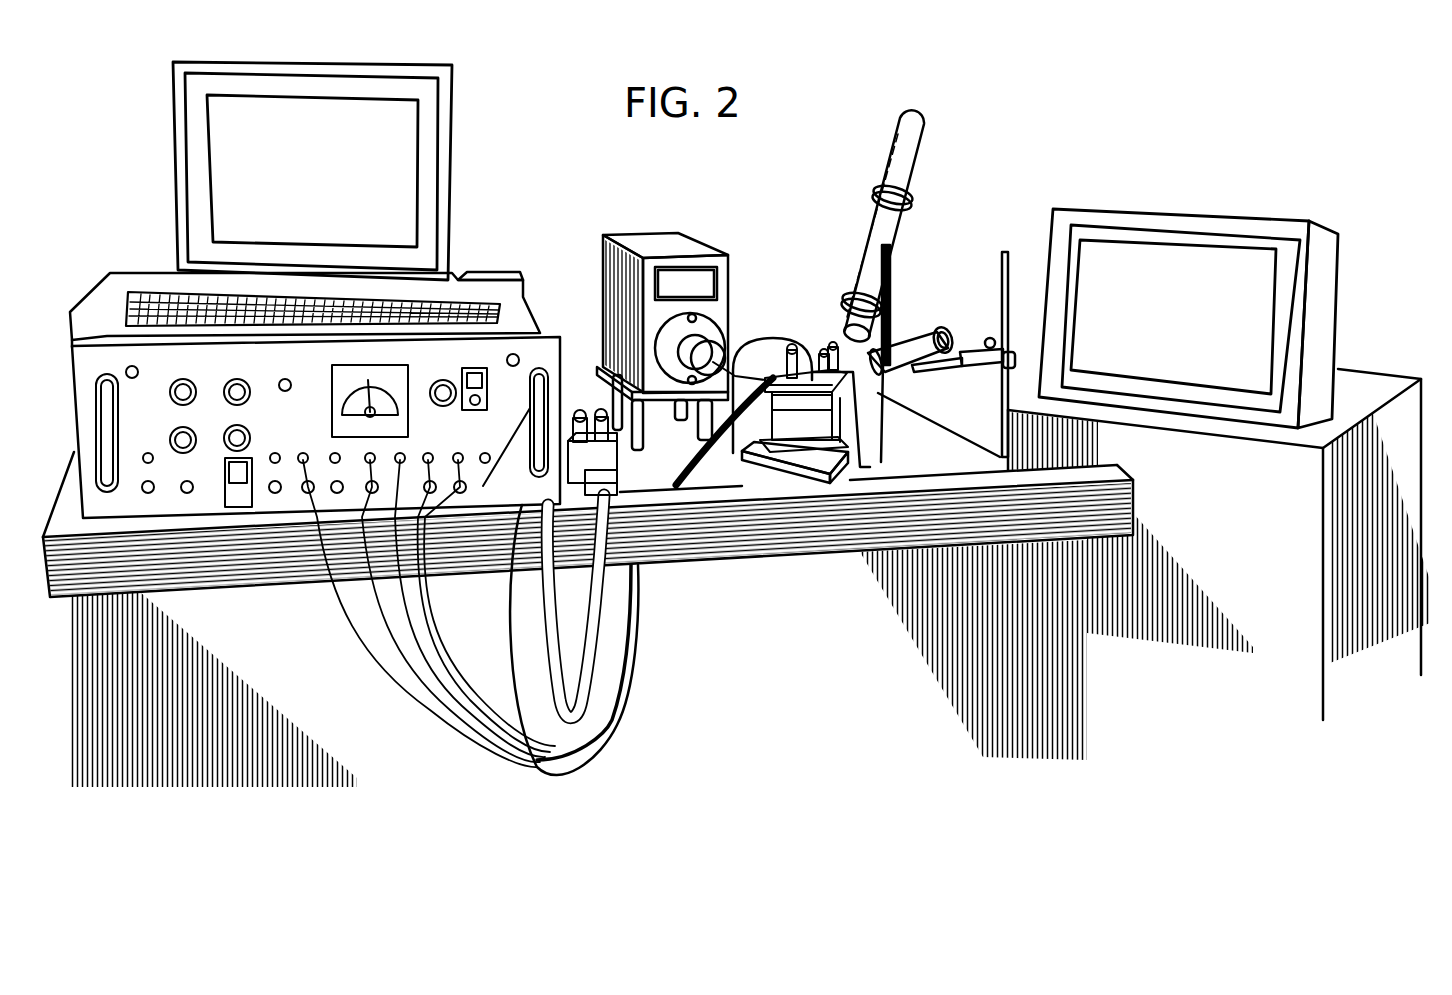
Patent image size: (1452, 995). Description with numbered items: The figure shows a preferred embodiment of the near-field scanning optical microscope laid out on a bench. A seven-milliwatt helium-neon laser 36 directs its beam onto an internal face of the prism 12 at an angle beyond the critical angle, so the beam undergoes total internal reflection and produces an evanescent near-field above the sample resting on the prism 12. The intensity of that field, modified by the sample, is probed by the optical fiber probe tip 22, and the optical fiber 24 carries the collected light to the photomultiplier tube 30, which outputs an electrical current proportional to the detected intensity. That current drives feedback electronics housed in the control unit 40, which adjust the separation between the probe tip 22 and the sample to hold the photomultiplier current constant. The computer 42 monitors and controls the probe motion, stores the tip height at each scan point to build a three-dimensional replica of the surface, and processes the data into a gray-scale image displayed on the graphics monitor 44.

The prism 12 is at (850, 463).
The optical fiber probe tip 22 is at (842, 425).
The optical fiber 24 is at (778, 337).
The photomultiplier tube 30 is at (603, 321).
The helium-neon laser 36 is at (924, 171).
The control unit 40 is at (530, 302).
The computer 42 is at (117, 297).
The graphics monitor 44 is at (1214, 206).